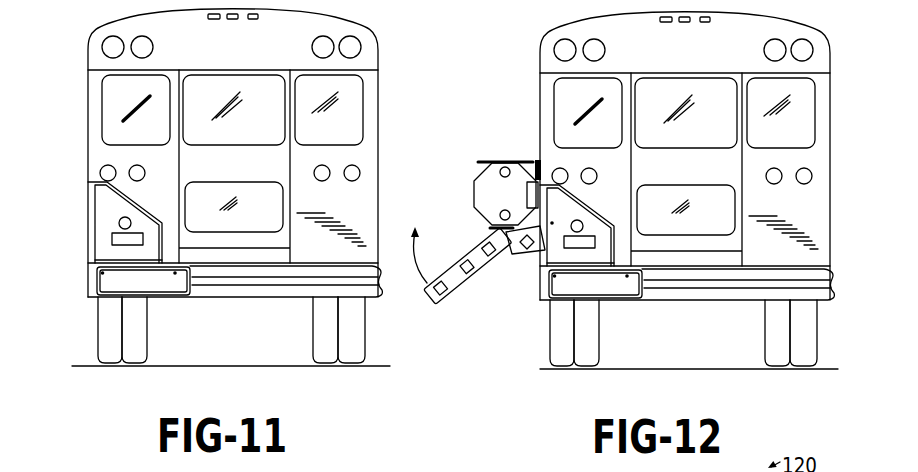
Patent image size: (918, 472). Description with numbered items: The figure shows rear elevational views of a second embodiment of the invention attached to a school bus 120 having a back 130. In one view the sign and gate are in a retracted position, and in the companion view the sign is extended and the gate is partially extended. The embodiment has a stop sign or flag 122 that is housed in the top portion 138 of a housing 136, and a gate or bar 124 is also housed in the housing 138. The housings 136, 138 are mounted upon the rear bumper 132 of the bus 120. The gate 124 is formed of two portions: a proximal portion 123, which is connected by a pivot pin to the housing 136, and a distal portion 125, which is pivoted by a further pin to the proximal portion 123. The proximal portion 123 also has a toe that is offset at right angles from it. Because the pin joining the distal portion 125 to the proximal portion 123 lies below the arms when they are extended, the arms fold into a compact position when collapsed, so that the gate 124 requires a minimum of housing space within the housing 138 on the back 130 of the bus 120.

In FIG. 11, the school bus 120 is at (368, 17).
In FIG. 12, the school bus 120 is at (561, 19).
In FIG. 12, the stop sign or flag 122 is at (473, 178).
In FIG. 12, the proximal portion 123 is at (528, 258).
In FIG. 12, the gate or bar 124 is at (479, 275).
In FIG. 12, the distal portion 125 is at (442, 322).
In FIG. 11, the back 130 is at (257, 60).
In FIG. 12, the back 130 is at (703, 183).
In FIG. 11, the rear bumper 132 is at (276, 291).
In FIG. 12, the rear bumper 132 is at (687, 284).
In FIG. 11, the housing 136 is at (161, 288).
In FIG. 12, the housing 136 is at (595, 284).
In FIG. 11, the top portion of housing 138 is at (102, 212).
In FIG. 12, the top portion of housing 138 is at (622, 195).